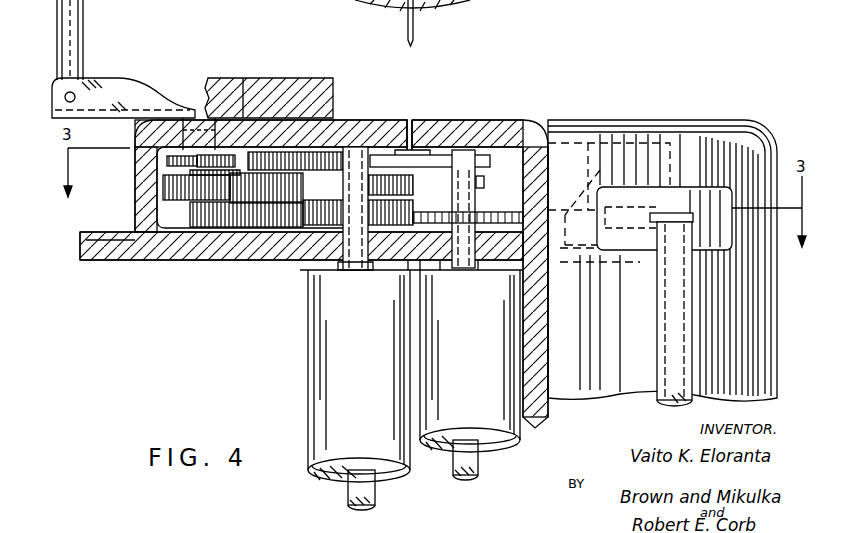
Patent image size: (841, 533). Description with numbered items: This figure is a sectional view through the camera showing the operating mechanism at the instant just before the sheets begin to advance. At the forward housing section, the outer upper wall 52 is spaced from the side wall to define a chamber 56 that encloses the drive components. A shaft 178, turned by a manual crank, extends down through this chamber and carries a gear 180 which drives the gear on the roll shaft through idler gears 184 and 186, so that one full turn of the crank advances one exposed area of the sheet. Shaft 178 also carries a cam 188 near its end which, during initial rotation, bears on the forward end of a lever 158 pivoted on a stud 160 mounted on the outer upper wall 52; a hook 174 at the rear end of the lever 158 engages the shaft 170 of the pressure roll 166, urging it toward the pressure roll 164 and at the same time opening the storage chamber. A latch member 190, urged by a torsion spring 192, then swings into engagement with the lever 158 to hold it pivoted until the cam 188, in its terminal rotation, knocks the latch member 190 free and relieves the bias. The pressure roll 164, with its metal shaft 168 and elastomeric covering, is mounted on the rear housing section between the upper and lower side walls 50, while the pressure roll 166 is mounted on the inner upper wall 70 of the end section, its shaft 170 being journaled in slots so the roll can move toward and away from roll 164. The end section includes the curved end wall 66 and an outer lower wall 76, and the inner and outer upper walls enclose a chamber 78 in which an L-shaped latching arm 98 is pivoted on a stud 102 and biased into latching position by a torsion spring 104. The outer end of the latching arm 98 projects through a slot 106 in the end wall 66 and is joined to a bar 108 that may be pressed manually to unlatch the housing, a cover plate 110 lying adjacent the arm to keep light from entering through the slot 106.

The outer lower wall 76 is at (108, 80).
The outer upper wall 52 is at (163, 130).
The torsion spring 192 is at (197, 158).
The latch member 190 is at (233, 163).
The cam 188 is at (285, 160).
The chamber 56 is at (240, 163).
The shaft 178 is at (330, 150).
The upper and lower side walls 50 is at (360, 120).
The lever 158 is at (413, 150).
The hook 174 is at (478, 157).
The chamber 78 is at (510, 150).
The latching arm 98 is at (545, 165).
The curved end wall 66 is at (745, 150).
The stud 102 is at (585, 182).
The cover plate 110 is at (642, 184).
The shaft 170 is at (482, 182).
The torsion spring 104 is at (512, 213).
The gear 180 is at (168, 186).
The idler gear 186 is at (195, 213).
The idler gear 184 is at (245, 182).
The stud 160 is at (322, 228).
The shaft 168 is at (348, 264).
The inner upper wall 70 is at (551, 285).
The slot 106 is at (598, 262).
The pressure roll 164 is at (335, 375).
The pressure roll 166 is at (522, 434).
The bar 108 is at (677, 388).